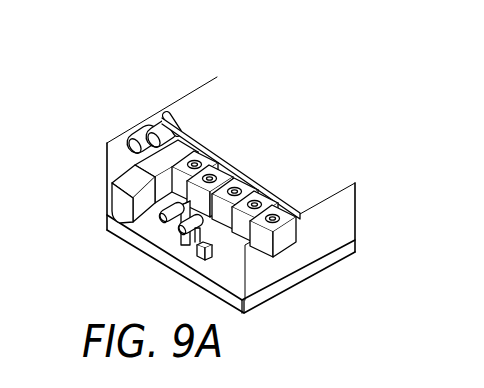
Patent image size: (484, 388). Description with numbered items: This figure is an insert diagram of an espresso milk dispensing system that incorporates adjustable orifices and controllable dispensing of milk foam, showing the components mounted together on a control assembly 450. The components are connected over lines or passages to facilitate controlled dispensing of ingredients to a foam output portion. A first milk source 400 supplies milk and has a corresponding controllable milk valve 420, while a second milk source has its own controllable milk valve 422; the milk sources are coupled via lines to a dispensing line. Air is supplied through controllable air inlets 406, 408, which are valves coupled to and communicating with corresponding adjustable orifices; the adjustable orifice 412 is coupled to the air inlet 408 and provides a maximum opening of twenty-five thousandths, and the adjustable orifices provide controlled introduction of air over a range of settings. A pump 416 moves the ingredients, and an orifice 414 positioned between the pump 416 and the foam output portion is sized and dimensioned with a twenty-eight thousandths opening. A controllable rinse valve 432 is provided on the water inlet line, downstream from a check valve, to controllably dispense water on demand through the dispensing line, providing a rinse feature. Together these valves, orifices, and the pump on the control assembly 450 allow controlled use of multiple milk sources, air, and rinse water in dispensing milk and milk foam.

The first milk source 400 is at (176, 240).
The controllable air inlet 406 is at (216, 168).
The controllable air inlet 408 is at (238, 184).
The adjustable orifice 412 is at (197, 250).
The orifice 414 is at (205, 150).
The pump 416 is at (110, 203).
The controllable milk valve 420 is at (277, 210).
The controllable milk valve 422 is at (256, 200).
The controllable rinse valve 432 is at (192, 140).
The control assembly 450 is at (301, 131).